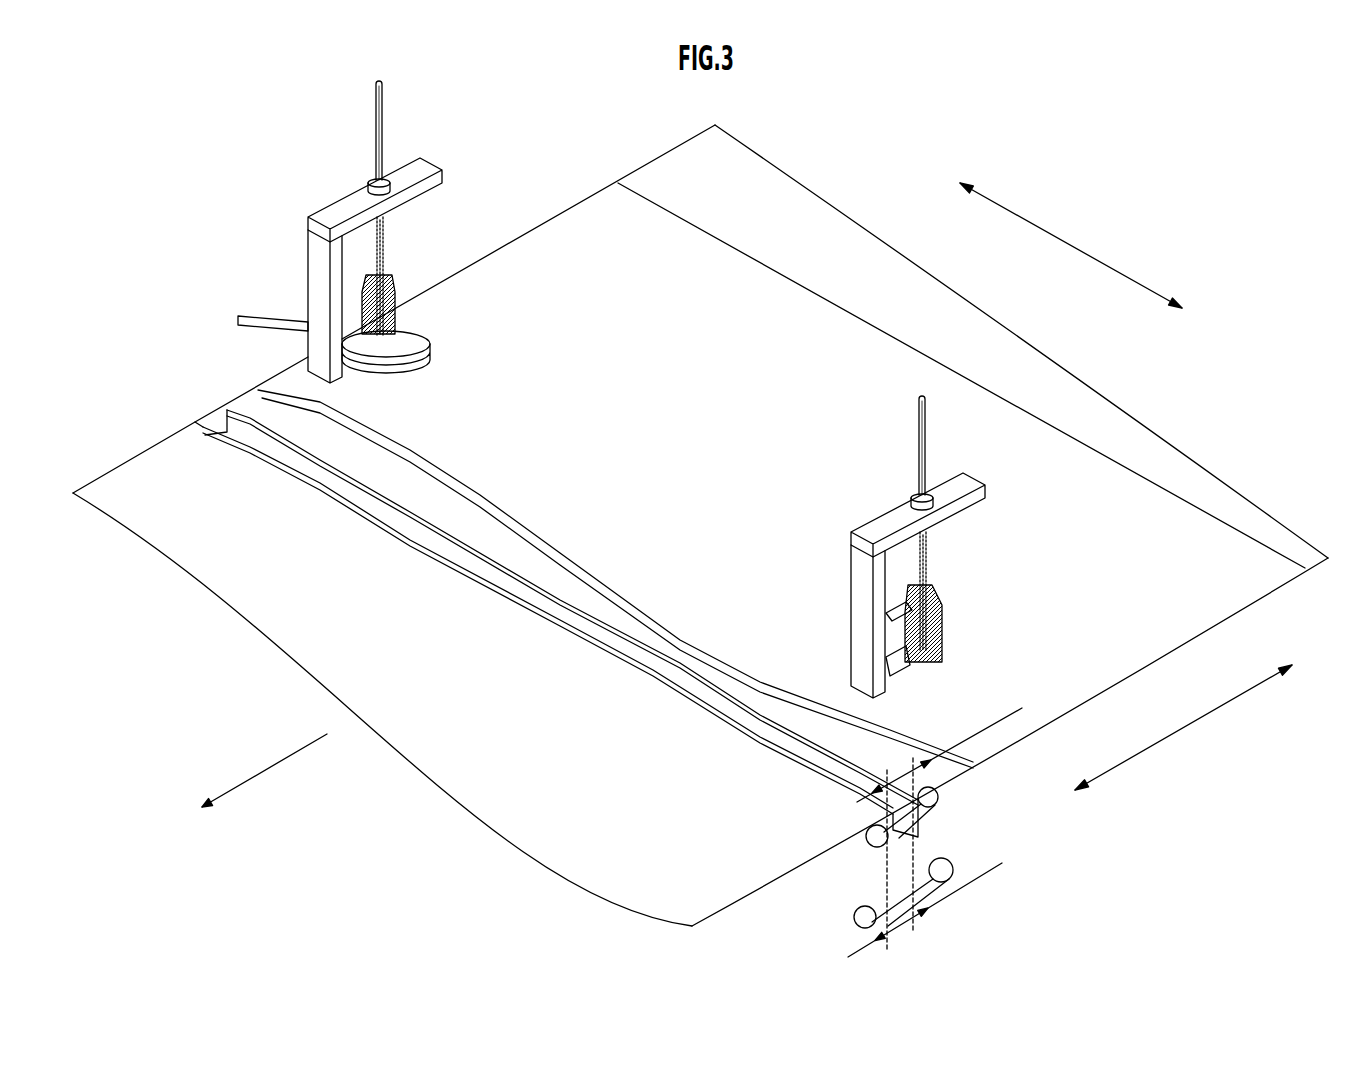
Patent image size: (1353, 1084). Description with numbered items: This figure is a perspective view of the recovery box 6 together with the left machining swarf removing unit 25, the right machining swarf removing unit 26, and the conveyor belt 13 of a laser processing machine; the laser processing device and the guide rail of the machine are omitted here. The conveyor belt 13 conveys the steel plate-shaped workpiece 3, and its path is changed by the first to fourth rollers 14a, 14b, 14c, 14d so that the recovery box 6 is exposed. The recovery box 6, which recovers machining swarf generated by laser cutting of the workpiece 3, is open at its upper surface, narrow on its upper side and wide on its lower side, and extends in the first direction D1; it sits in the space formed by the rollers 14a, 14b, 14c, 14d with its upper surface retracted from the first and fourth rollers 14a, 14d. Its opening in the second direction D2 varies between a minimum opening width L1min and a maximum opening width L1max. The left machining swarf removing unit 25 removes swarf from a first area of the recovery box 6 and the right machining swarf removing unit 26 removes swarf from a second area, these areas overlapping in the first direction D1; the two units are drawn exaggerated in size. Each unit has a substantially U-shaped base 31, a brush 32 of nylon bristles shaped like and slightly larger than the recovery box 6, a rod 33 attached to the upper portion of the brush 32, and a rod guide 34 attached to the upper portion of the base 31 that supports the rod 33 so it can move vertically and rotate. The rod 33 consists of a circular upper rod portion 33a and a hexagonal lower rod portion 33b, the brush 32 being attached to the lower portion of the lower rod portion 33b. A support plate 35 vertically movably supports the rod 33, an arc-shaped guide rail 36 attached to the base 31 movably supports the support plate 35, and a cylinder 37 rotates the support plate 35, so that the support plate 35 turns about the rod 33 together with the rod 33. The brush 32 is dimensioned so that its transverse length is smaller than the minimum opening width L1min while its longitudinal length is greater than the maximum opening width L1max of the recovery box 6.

The workpiece 3 is at (670, 165).
The recovery box 6 is at (212, 420).
The conveyor belt 13 is at (540, 245).
The first roller 14a is at (940, 800).
The second roller 14b is at (956, 866).
The third roller 14c is at (856, 920).
The fourth roller 14d is at (866, 846).
The left machining swarf removing unit 25 is at (288, 187).
The right machining swarf removing unit 26 is at (843, 498).
The base 31 is at (428, 160).
The brush 32 is at (392, 322).
The rod 33 is at (371, 126).
The upper rod portion 33a is at (373, 148).
The lower rod portion 33b is at (386, 258).
The rod guide 34 is at (368, 190).
The support plate 35 is at (426, 340).
The guide rail 36 is at (420, 357).
The cylinder 37 is at (281, 316).
The first direction D1 is at (1063, 240).
The second direction D2 is at (1186, 724).
The minimum opening width L1min is at (939, 829).
The maximum opening width L1max is at (937, 910).